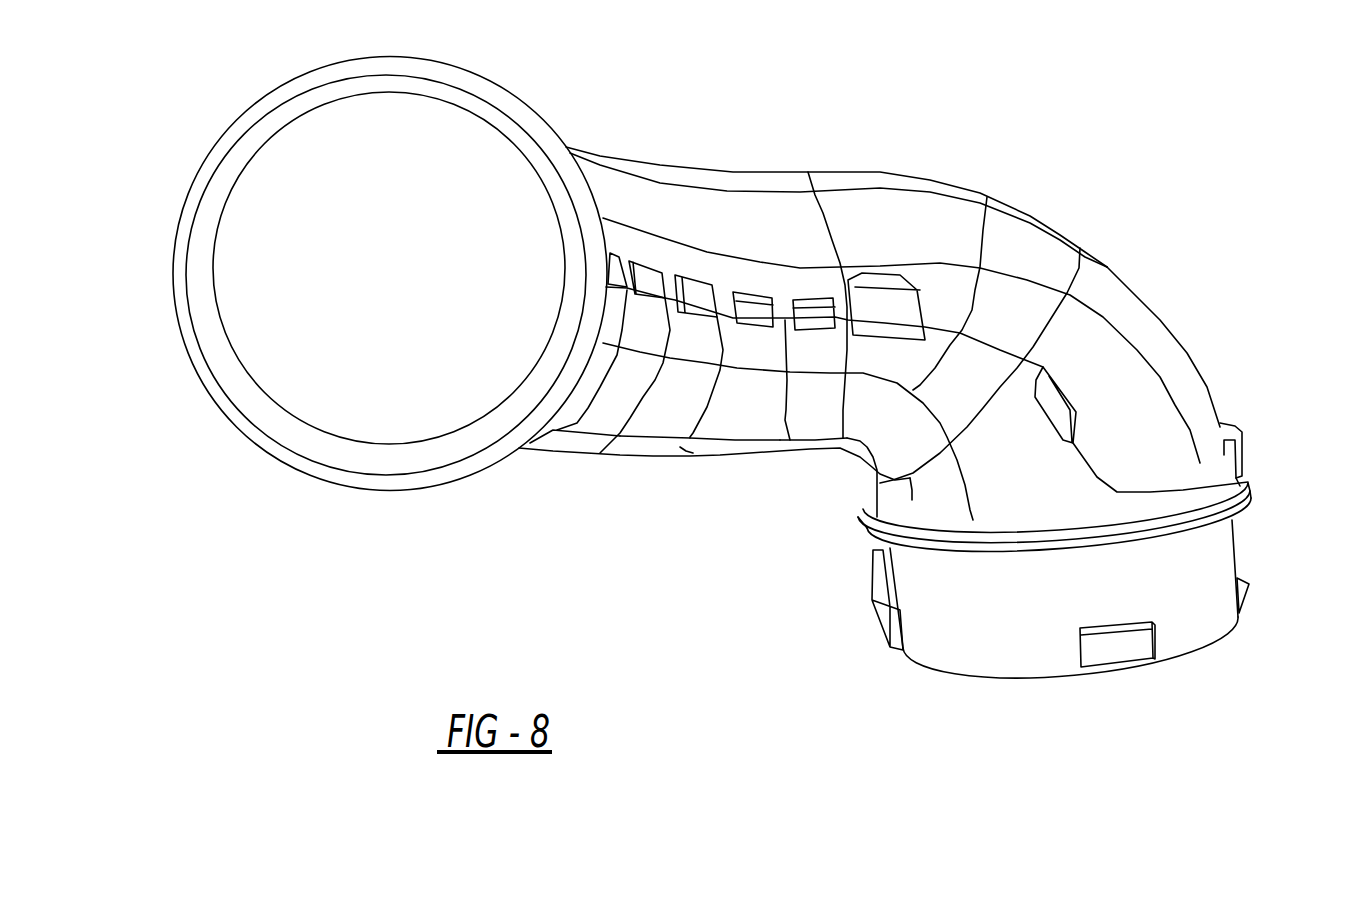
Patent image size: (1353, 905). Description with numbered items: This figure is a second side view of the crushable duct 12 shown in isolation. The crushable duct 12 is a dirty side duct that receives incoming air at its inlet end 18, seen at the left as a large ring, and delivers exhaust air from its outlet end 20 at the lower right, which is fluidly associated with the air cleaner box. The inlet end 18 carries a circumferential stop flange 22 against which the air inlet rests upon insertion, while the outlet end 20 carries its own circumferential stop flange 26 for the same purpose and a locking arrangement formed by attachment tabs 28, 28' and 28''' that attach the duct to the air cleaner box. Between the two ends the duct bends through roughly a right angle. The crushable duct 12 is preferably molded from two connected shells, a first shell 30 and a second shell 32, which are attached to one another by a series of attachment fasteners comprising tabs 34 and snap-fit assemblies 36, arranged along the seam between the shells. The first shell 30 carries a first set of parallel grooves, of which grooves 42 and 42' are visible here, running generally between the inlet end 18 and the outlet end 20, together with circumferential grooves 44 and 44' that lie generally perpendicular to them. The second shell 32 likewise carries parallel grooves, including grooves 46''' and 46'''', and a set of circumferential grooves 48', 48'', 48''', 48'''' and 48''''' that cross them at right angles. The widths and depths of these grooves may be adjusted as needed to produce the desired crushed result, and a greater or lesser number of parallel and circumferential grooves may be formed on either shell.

The crushable duct 12 is at (818, 401).
The inlet end 18 is at (390, 313).
The outlet end 20 is at (1060, 599).
The circumferential stop flange 22 is at (389, 344).
The circumferential stop flange 26 is at (714, 533).
The attachment tab 28 is at (1117, 711).
The attachment tab 28' is at (1292, 624).
The attachment tab 28''' is at (844, 613).
The first shell 30 is at (836, 167).
The second shell 32 is at (788, 438).
The tab 34 is at (721, 201).
The snap-fit assembly 36 is at (962, 260).
The parallel groove 42 is at (901, 275).
The parallel groove 42' is at (824, 207).
The circumferential groove 44 is at (1173, 327).
The circumferential groove 44' is at (838, 160).
The parallel groove 46''' is at (635, 422).
The parallel groove 46'''' is at (995, 227).
The circumferential groove 48' is at (558, 488).
The circumferential groove 48'' is at (613, 507).
The circumferential groove 48''' is at (721, 499).
The circumferential groove 48'''' is at (804, 496).
The circumferential groove 48''''' is at (838, 464).